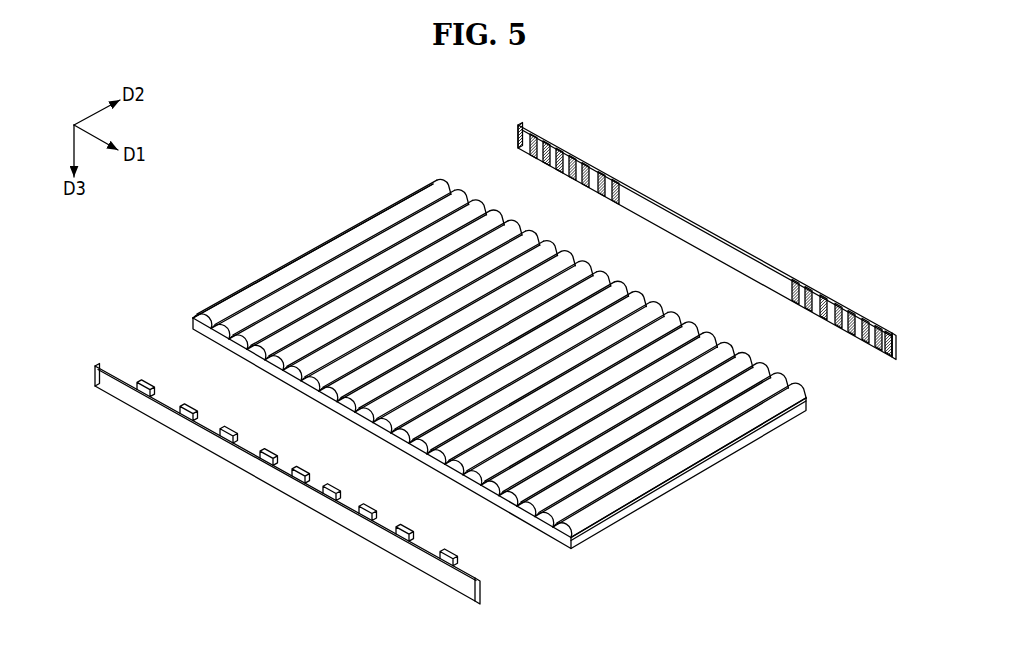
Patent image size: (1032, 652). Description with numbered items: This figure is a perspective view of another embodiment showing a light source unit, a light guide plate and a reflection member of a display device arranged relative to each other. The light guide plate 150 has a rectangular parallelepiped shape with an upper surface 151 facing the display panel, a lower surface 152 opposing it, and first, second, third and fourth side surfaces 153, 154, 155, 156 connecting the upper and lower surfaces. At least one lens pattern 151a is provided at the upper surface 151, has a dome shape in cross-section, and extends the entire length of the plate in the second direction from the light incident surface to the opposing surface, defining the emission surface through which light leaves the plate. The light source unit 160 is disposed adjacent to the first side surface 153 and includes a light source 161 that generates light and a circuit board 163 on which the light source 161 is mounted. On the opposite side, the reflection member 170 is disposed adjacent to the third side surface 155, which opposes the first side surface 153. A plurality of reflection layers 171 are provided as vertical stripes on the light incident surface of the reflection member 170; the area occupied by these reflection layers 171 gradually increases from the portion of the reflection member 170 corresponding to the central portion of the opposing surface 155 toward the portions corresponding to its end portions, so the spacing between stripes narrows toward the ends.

The light guide plate 150 is at (501, 354).
The upper surface 151 is at (381, 252).
The lens pattern 151a is at (613, 497).
The lower surface 152 is at (514, 531).
The first side surface 153 is at (375, 436).
The second side surface 154 is at (709, 473).
The third side surface 155 is at (666, 298).
The fourth side surface 156 is at (296, 249).
The light source unit 160 is at (287, 484).
The light source 161 is at (143, 388).
The circuit board 163 is at (185, 427).
The reflection member 170 is at (707, 238).
The reflection layer 171 is at (605, 187).